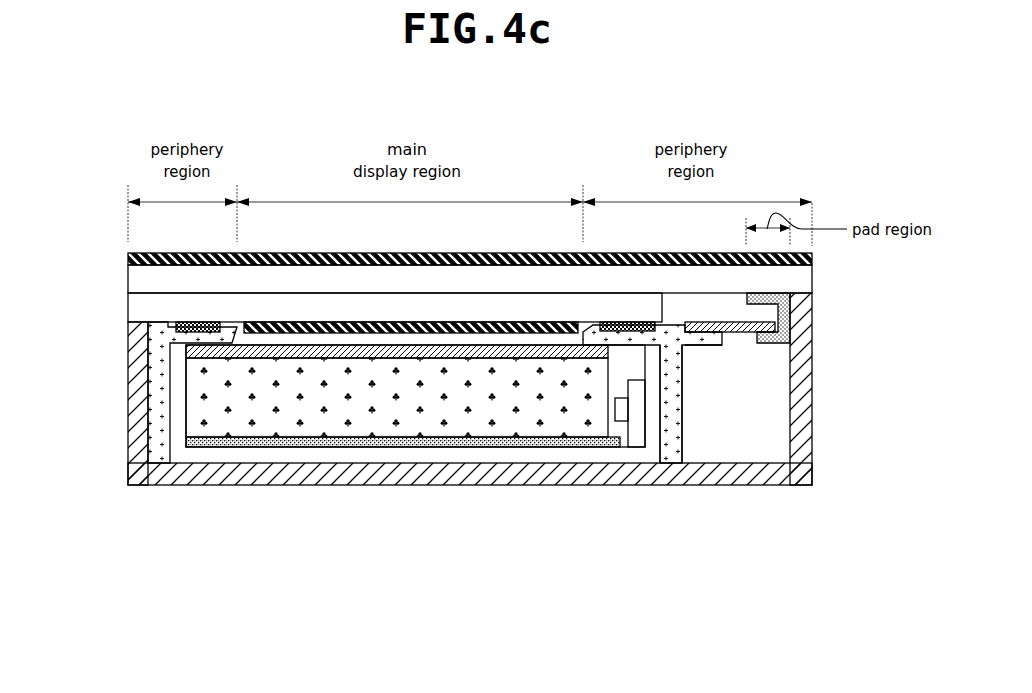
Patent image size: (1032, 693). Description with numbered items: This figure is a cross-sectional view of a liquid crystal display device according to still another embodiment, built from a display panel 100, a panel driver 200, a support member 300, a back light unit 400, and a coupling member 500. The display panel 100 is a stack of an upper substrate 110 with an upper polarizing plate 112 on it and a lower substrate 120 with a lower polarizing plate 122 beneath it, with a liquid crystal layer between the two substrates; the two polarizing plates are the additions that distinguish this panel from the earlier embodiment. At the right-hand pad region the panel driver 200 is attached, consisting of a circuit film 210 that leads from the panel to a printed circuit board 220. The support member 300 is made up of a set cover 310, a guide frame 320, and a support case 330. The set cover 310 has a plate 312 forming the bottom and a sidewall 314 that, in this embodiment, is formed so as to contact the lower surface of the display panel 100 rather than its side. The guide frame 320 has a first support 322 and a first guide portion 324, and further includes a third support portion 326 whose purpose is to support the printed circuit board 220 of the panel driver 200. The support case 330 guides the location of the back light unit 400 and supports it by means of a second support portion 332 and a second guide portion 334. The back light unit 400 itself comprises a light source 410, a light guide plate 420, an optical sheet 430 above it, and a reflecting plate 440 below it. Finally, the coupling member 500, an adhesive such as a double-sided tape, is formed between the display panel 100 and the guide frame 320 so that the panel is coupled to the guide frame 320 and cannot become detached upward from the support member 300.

The display panel 100 is at (414, 294).
The upper substrate 110 is at (135, 280).
The upper polarizing plate 112 is at (127, 259).
The lower substrate 120 is at (135, 309).
The lower polarizing plate 122 is at (258, 327).
The panel driver 200 is at (827, 337).
The circuit film 210 is at (790, 313).
The printed circuit board 220 is at (742, 333).
The support member 300 is at (494, 451).
The set cover 310 is at (494, 431).
The plate 312 is at (808, 480).
The sidewall 314 is at (813, 452).
The guide frame 320 is at (711, 446).
The first support 322 is at (642, 347).
The first guide portion 324 is at (683, 387).
The third support portion 326 is at (707, 345).
The support case 330 is at (435, 446).
The second support portion 332 is at (604, 458).
The second guide portion 334 is at (667, 432).
The back light unit 400 is at (415, 460).
The light source 410 is at (620, 410).
The light guide plate 420 is at (353, 420).
The optical sheet 430 is at (302, 357).
The reflecting plate 440 is at (400, 443).
The coupling member 500 is at (197, 332).